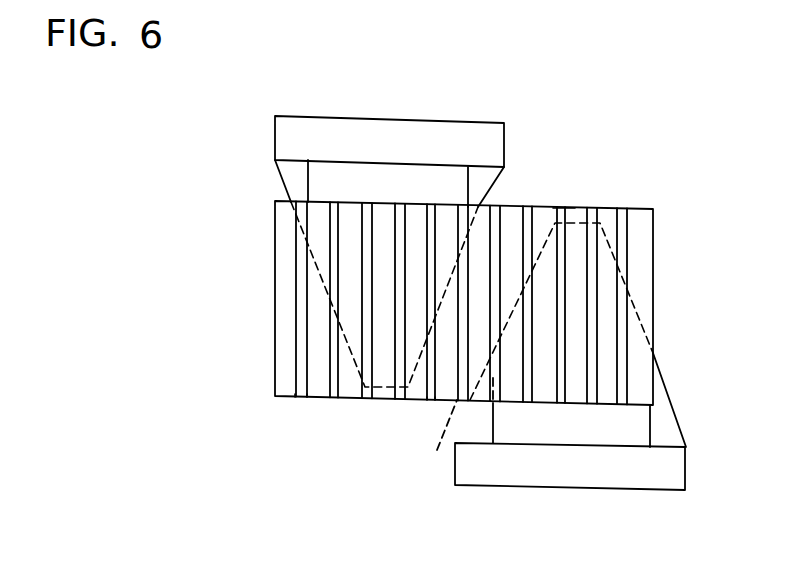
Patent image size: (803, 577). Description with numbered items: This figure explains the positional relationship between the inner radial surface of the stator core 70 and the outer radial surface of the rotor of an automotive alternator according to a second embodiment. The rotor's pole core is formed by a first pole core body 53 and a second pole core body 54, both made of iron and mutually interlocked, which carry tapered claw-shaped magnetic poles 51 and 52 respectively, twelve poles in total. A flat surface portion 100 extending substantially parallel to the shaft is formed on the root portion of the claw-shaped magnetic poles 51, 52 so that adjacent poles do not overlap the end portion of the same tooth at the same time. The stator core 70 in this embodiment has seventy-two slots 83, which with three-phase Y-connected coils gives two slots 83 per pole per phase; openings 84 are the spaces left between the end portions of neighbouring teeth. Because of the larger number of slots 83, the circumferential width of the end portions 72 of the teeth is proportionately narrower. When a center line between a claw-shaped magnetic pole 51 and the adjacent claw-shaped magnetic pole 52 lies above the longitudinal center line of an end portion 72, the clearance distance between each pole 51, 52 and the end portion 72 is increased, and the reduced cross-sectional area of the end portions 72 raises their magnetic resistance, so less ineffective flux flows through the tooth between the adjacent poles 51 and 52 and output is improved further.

The claw-shaped magnetic pole 51 is at (360, 302).
The claw-shaped magnetic pole 52 is at (603, 297).
The first pole core body 53 is at (290, 133).
The second pole core body 54 is at (653, 480).
The stator core 70 is at (477, 326).
The end portion 72 is at (482, 217).
The slot 83 is at (563, 207).
The opening 84 is at (300, 397).
The flat surface portion 100 is at (307, 173).